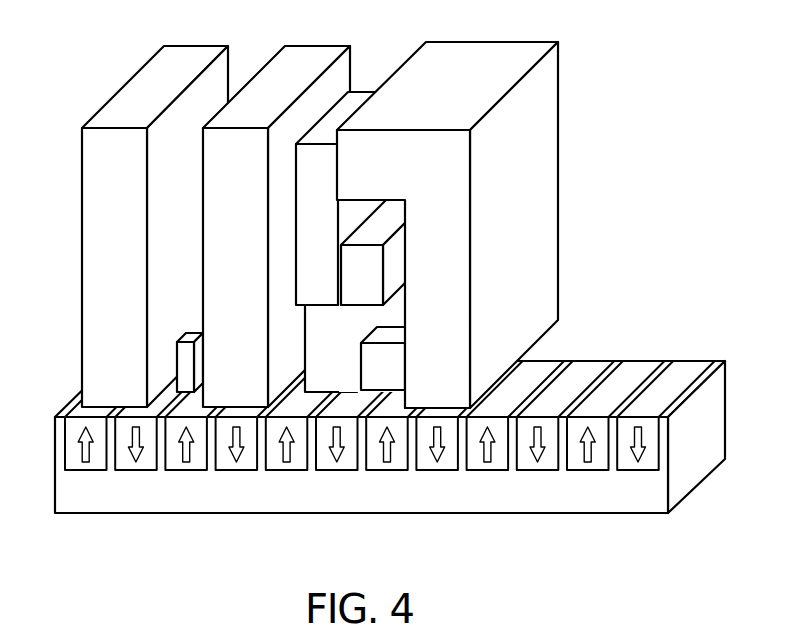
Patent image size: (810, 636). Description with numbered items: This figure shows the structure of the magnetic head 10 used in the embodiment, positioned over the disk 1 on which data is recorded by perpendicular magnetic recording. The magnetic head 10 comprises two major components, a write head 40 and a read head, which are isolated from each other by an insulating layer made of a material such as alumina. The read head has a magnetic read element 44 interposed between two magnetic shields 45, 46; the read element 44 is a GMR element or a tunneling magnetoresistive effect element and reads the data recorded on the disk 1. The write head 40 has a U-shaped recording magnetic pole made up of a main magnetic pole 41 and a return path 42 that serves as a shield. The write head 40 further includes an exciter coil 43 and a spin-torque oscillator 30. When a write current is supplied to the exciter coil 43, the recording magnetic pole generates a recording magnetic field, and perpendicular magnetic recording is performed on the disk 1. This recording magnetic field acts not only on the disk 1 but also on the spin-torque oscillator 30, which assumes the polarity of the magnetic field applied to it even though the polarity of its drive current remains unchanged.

The disk 1 is at (382, 497).
The magnetic head 10 is at (669, 66).
The spin-torque oscillator 30 is at (378, 377).
The write head 40 is at (629, 148).
The main magnetic pole 41 is at (325, 380).
The return path 42 is at (455, 397).
The exciter coil 43 is at (370, 272).
The magnetic read element 44 is at (185, 380).
The magnetic shield 45 is at (85, 275).
The magnetic shield 46 is at (317, 53).